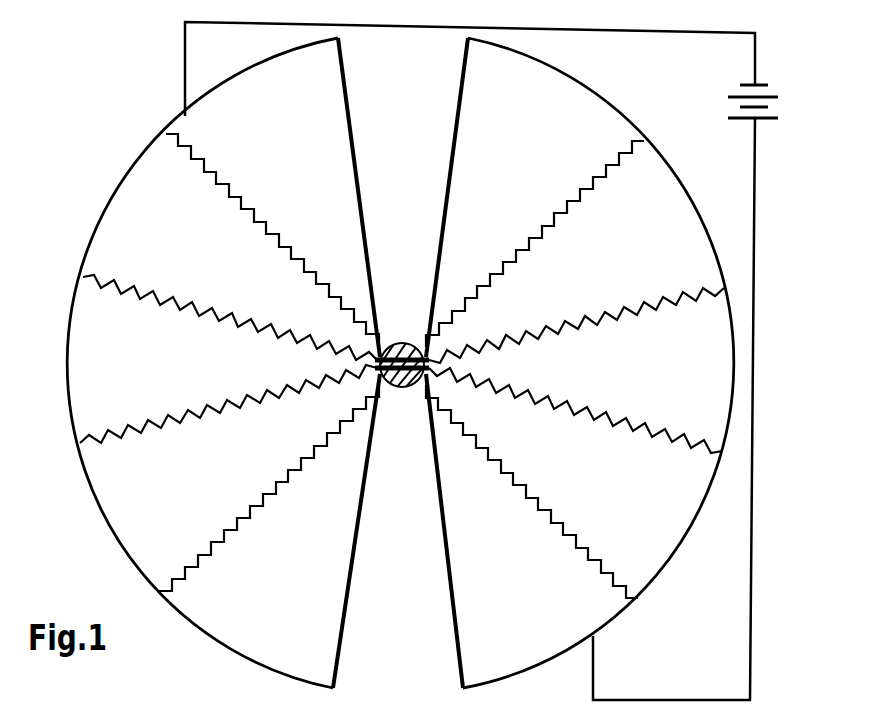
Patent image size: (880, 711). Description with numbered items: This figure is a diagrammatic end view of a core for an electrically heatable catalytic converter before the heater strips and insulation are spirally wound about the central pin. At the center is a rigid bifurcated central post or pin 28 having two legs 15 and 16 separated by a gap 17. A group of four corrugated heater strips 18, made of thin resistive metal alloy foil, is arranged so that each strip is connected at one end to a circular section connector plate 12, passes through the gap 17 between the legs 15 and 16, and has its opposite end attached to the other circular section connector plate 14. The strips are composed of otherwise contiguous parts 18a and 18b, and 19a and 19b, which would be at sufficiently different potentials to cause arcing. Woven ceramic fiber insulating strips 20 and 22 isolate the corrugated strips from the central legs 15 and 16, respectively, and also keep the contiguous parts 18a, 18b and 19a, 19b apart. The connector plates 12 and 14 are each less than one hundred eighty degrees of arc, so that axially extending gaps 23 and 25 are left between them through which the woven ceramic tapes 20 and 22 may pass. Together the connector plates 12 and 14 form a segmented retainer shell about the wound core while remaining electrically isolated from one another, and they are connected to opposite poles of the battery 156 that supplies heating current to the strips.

The circular section connector plate 12 is at (599, 102).
The circular section connector plate 14 is at (120, 192).
The leg of the rigid central post 15 is at (387, 398).
The leg of the rigid central post 16 is at (385, 336).
The gap 17 is at (433, 366).
The corrugated heater strip 18 is at (655, 305).
The heater strip part 18a is at (597, 416).
The heater strip part 18b is at (200, 415).
The heater strip part 19a is at (518, 257).
The heater strip part 19b is at (265, 243).
The woven ceramic fiber insulating strip 20 is at (357, 543).
The woven ceramic fiber insulating strip 22 is at (443, 193).
The axially extending gap 23 is at (423, 38).
The axially extending gap 25 is at (400, 693).
The rigid central post or pin 28 is at (418, 303).
The battery 156 is at (504, 361).